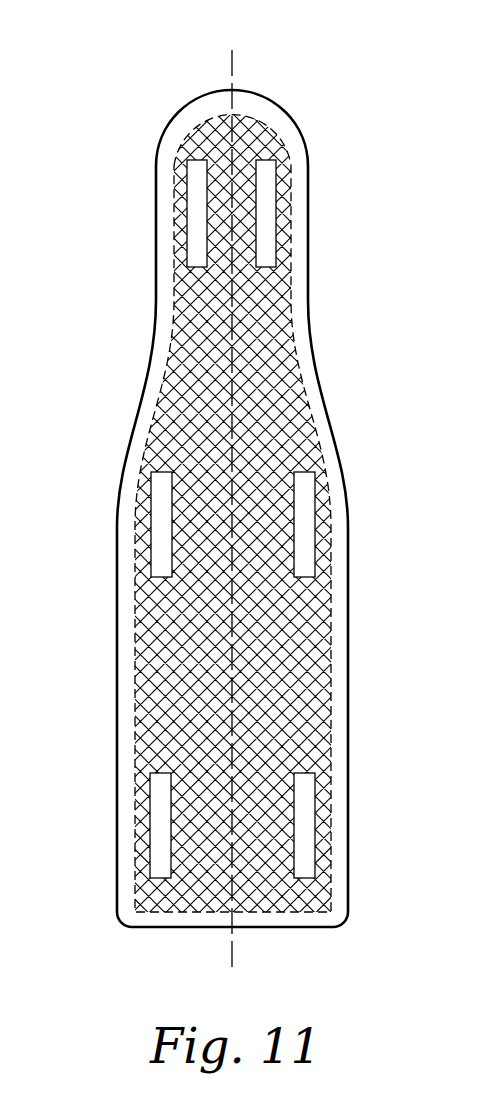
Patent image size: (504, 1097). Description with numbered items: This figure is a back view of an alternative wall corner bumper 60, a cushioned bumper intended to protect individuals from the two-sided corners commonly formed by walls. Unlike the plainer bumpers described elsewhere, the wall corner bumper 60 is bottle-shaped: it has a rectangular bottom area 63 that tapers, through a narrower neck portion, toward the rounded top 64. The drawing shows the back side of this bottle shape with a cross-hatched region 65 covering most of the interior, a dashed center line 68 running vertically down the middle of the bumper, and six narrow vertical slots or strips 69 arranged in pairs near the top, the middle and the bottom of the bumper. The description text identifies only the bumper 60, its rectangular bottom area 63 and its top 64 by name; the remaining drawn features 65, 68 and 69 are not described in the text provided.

The wall corner bumper 60 is at (352, 93).
The rectangular bottom area 63 is at (120, 923).
The top 64 is at (228, 90).
The abrasive / mesh layer 65 is at (267, 335).
The center line / axis 68 is at (235, 945).
The slots 69 is at (197, 203).